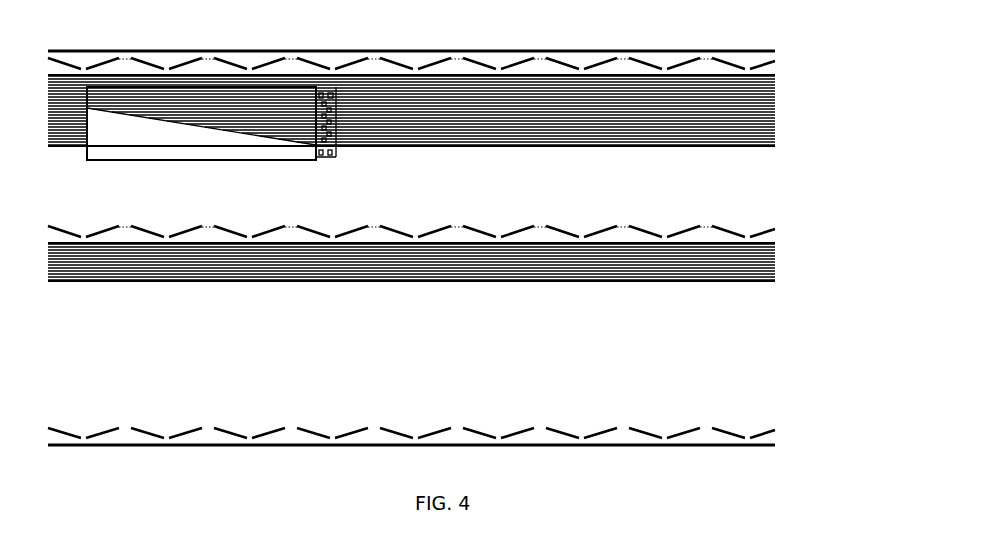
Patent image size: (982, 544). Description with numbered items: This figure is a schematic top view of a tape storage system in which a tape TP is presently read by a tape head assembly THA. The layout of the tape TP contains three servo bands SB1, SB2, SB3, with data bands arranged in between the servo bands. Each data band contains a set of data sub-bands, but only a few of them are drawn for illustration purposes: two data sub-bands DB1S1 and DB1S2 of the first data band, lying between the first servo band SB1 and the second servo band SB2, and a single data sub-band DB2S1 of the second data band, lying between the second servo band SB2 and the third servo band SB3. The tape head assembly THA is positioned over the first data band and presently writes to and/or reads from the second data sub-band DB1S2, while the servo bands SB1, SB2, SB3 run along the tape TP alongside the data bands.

The tape TP is at (327, 48).
The servo band SB1 is at (783, 54).
The data sub-band of the first data band DB1S1 is at (783, 84).
The second data sub-band of the first data band DB1S2 is at (783, 115).
The tape head assembly THA is at (336, 152).
The servo band SB2 is at (779, 223).
The data sub-band of the second data band DB2S1 is at (779, 257).
The servo band SB3 is at (776, 427).